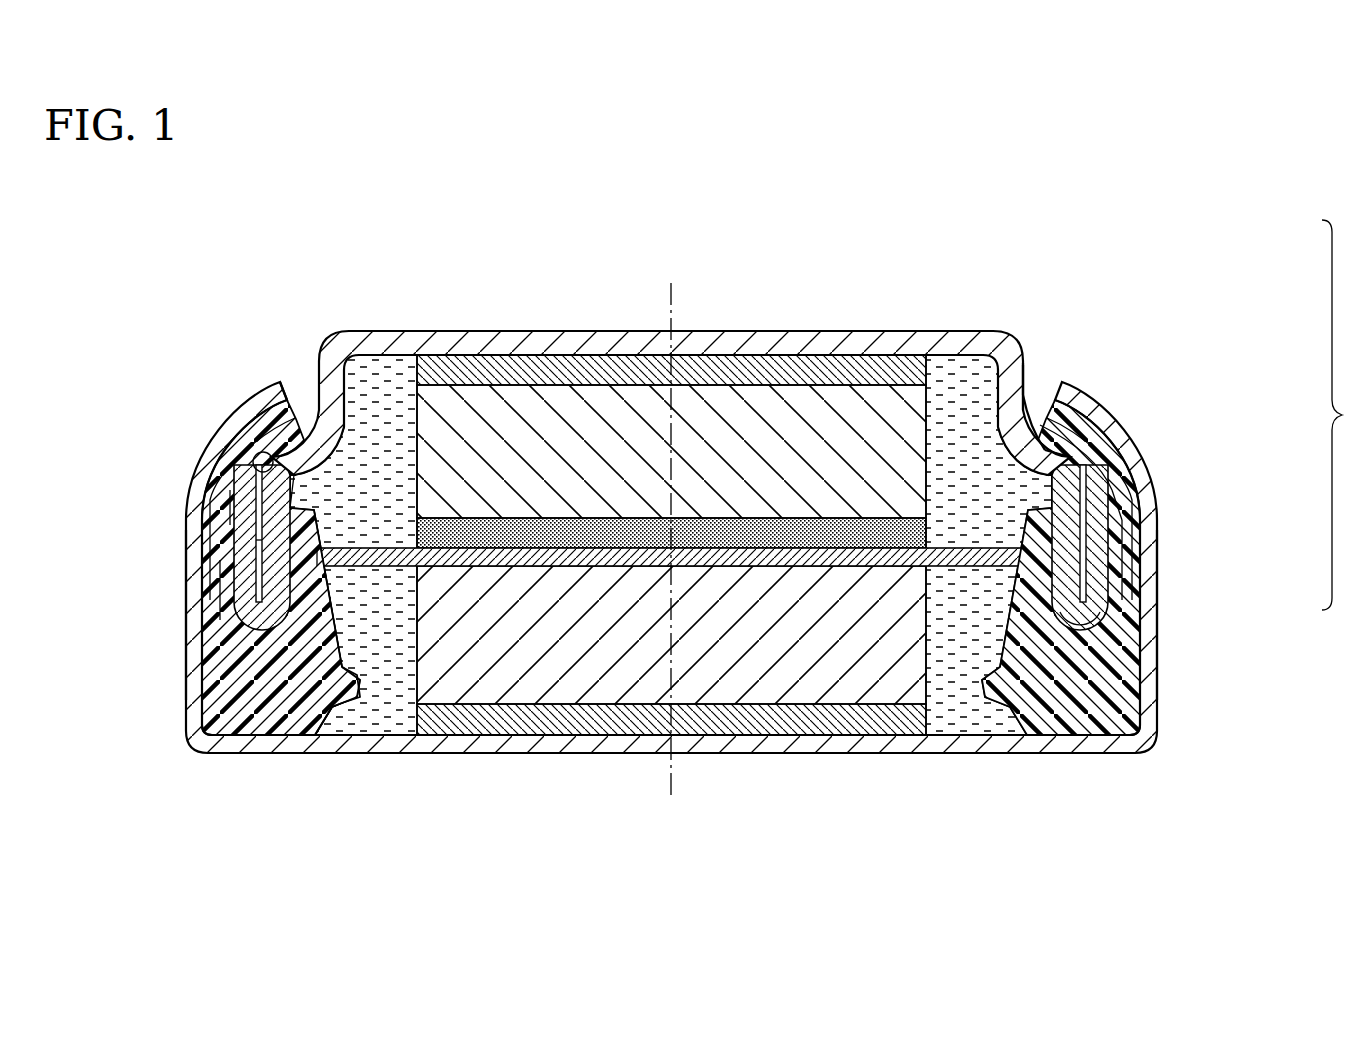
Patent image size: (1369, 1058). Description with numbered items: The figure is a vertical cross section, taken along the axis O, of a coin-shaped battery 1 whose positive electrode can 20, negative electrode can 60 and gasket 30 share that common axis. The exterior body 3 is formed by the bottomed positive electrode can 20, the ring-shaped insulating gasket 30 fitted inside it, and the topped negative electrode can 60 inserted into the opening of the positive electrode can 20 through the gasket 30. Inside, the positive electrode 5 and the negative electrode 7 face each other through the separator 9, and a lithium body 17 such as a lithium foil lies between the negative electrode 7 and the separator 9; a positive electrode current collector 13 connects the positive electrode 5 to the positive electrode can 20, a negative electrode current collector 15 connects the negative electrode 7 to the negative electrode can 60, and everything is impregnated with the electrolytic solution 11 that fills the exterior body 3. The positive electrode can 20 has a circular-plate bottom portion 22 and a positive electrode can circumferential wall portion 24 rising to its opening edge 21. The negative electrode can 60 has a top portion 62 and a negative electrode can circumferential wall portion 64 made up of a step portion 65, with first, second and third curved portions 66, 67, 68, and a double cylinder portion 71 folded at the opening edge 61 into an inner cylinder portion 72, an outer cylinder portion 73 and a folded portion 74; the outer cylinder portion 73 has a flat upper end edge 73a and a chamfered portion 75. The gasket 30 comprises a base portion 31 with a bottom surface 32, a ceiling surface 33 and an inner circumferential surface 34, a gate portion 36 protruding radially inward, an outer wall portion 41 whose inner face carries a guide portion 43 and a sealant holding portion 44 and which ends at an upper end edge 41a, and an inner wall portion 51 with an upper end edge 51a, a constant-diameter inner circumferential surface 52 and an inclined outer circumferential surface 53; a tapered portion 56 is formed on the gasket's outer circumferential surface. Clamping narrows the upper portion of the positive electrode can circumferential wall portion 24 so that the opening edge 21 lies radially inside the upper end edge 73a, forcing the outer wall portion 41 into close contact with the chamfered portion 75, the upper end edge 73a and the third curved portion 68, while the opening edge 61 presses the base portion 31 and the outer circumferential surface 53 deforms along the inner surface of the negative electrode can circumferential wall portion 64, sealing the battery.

The battery 1 is at (245, 232).
The exterior body 3 is at (1343, 415).
The positive electrode 5 is at (806, 690).
The negative electrode 7 is at (853, 430).
The separator 9 is at (885, 557).
The electrolytic solution 11 is at (958, 400).
The positive electrode current collector 13 is at (622, 720).
The negative electrode current collector 15 is at (620, 372).
The lithium body 17 is at (540, 530).
The positive electrode can 20 is at (704, 566).
The opening edge 21 is at (282, 394).
The bottom portion 22 is at (500, 745).
The positive electrode can circumferential wall portion 24 is at (193, 600).
The gasket 30 is at (1159, 484).
The base portion 31 is at (273, 700).
The bottom surface 32 is at (243, 740).
The ceiling surface 33 is at (253, 622).
The inner circumferential surface 34 is at (396, 650).
The gate portion 36 is at (360, 688).
The outer wall portion 41 is at (237, 562).
The upper end edge 41a is at (280, 440).
The guide portion 43 is at (257, 470).
The sealant holding portion 44 is at (250, 608).
The inner wall portion 51 is at (318, 548).
The upper end edge 51a is at (296, 470).
The inner circumferential surface 52 is at (335, 620).
The outer circumferential surface 53 is at (256, 545).
The tapered portion 56 is at (237, 525).
The negative electrode can 60 is at (789, 347).
The opening edge 61 is at (1080, 615).
The top portion 62 is at (800, 345).
The negative electrode can circumferential wall portion 64 is at (1139, 427).
The step portion 65 is at (1225, 313).
The first curved portion 66 is at (1025, 398).
The second curved portion 67 is at (1040, 438).
The third curved portion 68 is at (1060, 462).
The double cylinder portion 71 is at (1115, 540).
The inner cylinder portion 72 is at (1040, 690).
The outer cylinder portion 73 is at (1088, 578).
The upper end edge 73a is at (1100, 443).
The folded portion 74 is at (1105, 602).
The chamfered portion 75 is at (1128, 478).
The axis O is at (676, 300).